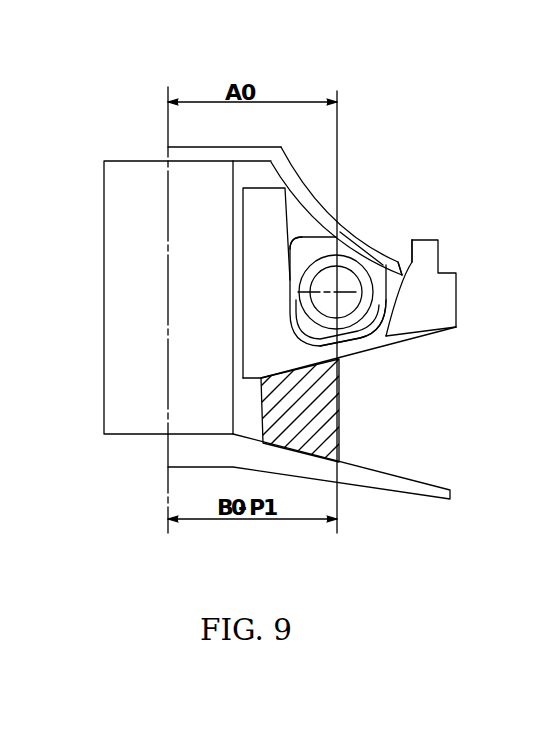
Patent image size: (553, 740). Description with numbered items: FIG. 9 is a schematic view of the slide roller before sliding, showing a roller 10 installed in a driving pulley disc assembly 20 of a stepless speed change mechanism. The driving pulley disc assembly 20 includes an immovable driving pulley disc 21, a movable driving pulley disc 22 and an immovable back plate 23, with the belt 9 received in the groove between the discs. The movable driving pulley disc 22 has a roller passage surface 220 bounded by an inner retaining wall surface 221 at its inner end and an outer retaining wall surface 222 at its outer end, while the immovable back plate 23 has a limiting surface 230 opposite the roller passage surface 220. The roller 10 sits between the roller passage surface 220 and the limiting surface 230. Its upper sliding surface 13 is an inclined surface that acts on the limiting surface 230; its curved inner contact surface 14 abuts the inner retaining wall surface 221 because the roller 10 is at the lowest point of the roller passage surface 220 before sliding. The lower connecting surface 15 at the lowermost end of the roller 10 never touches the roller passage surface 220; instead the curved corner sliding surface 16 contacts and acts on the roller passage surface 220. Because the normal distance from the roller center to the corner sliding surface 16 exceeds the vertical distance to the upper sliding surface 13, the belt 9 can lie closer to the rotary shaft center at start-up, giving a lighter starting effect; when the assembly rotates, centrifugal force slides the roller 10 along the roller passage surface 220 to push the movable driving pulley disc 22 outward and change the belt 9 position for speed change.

The driving pulley disc assembly 20 is at (155, 150).
The immovable back plate 23 is at (287, 167).
The inner retaining wall surface 221 is at (298, 246).
The roller 10 is at (308, 237).
The limiting surface 230 is at (357, 250).
The upper sliding surface 13 is at (357, 252).
The inner contact surface 14 is at (295, 291).
The movable driving pulley disc 22 is at (440, 300).
The outer retaining wall surface 222 is at (409, 265).
The roller passage surface 220 is at (383, 312).
The corner sliding surface 16 is at (372, 327).
The lower connecting surface 15 is at (342, 343).
The belt 9 is at (330, 444).
The immovable driving pulley disc 21 is at (377, 480).